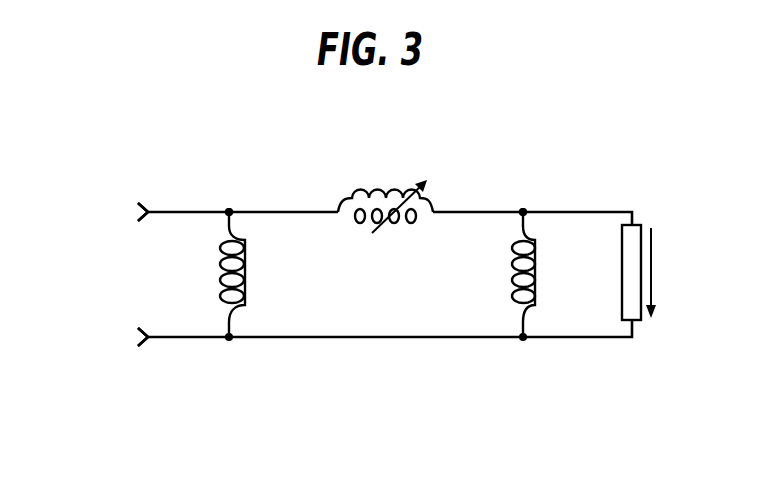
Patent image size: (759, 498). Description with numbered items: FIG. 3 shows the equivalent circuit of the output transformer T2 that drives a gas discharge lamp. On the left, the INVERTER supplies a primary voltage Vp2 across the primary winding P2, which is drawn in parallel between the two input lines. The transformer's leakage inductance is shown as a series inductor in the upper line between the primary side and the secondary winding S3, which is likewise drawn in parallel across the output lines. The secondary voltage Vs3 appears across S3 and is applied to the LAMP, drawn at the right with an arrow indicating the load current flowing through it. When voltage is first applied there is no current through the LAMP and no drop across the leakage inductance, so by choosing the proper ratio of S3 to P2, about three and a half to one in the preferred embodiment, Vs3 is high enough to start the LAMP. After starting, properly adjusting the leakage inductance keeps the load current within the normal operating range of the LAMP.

The inverter INVERTER is at (109, 274).
The primary voltage Vp2 is at (230, 191).
The primary winding P2 is at (248, 274).
The output transformer T2 is at (386, 136).
The secondary voltage Vs3 is at (522, 191).
The secondary winding S3 is at (506, 274).
The gas discharge lamp LAMP is at (620, 299).